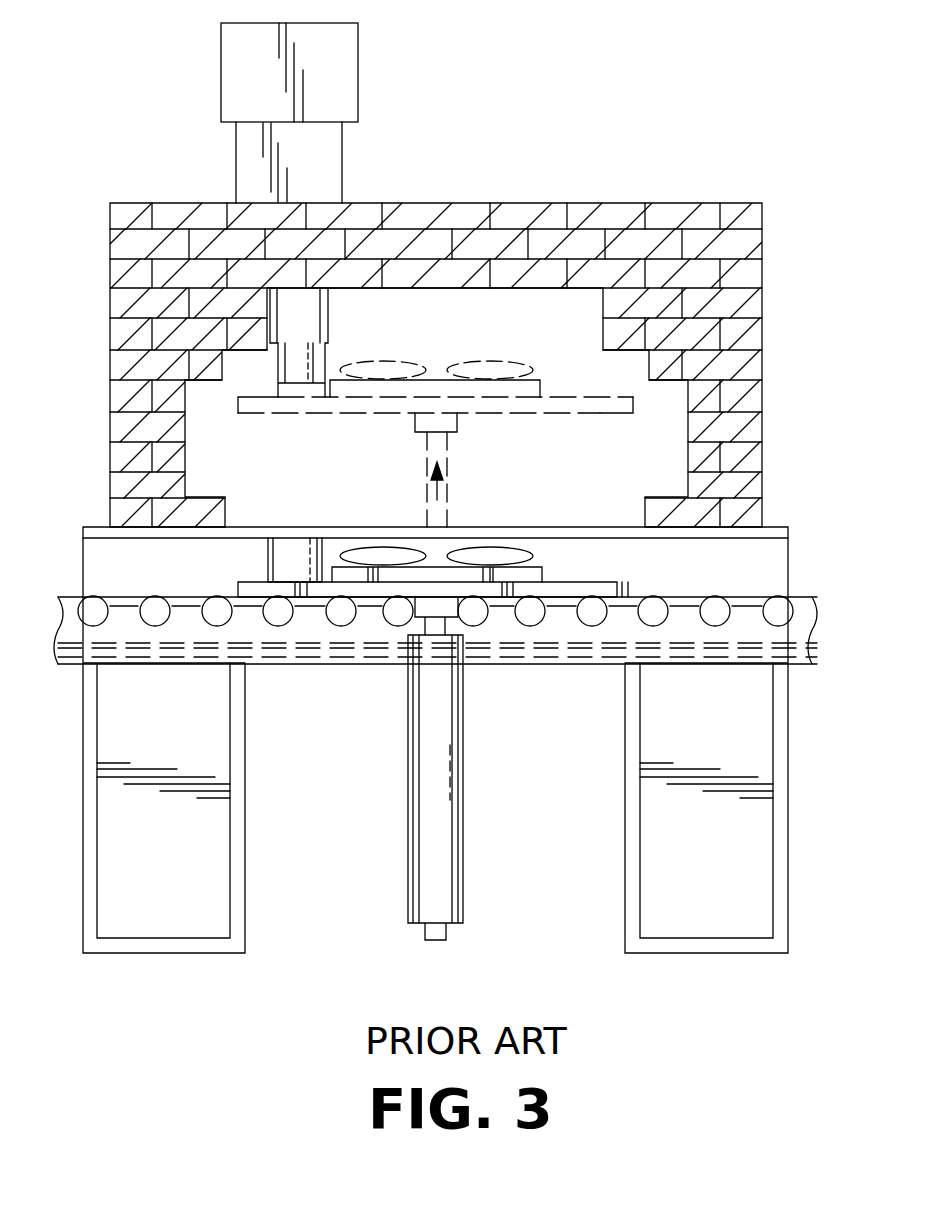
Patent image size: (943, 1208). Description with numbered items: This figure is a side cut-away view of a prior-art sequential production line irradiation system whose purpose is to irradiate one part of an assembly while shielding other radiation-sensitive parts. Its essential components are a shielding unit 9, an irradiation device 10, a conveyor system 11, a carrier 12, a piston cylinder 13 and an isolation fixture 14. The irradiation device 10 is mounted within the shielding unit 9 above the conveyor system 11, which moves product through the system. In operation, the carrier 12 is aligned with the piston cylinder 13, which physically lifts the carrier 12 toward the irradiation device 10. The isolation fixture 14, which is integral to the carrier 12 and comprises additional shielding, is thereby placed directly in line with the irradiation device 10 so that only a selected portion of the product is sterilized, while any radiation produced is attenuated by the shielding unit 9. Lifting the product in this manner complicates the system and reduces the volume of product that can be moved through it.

The shielding unit 9 is at (738, 277).
The irradiation device 10 is at (312, 315).
The conveyor system 11 is at (740, 660).
The carrier 12 is at (572, 582).
The piston cylinder 13 is at (427, 753).
The isolation fixture 14 is at (293, 562).